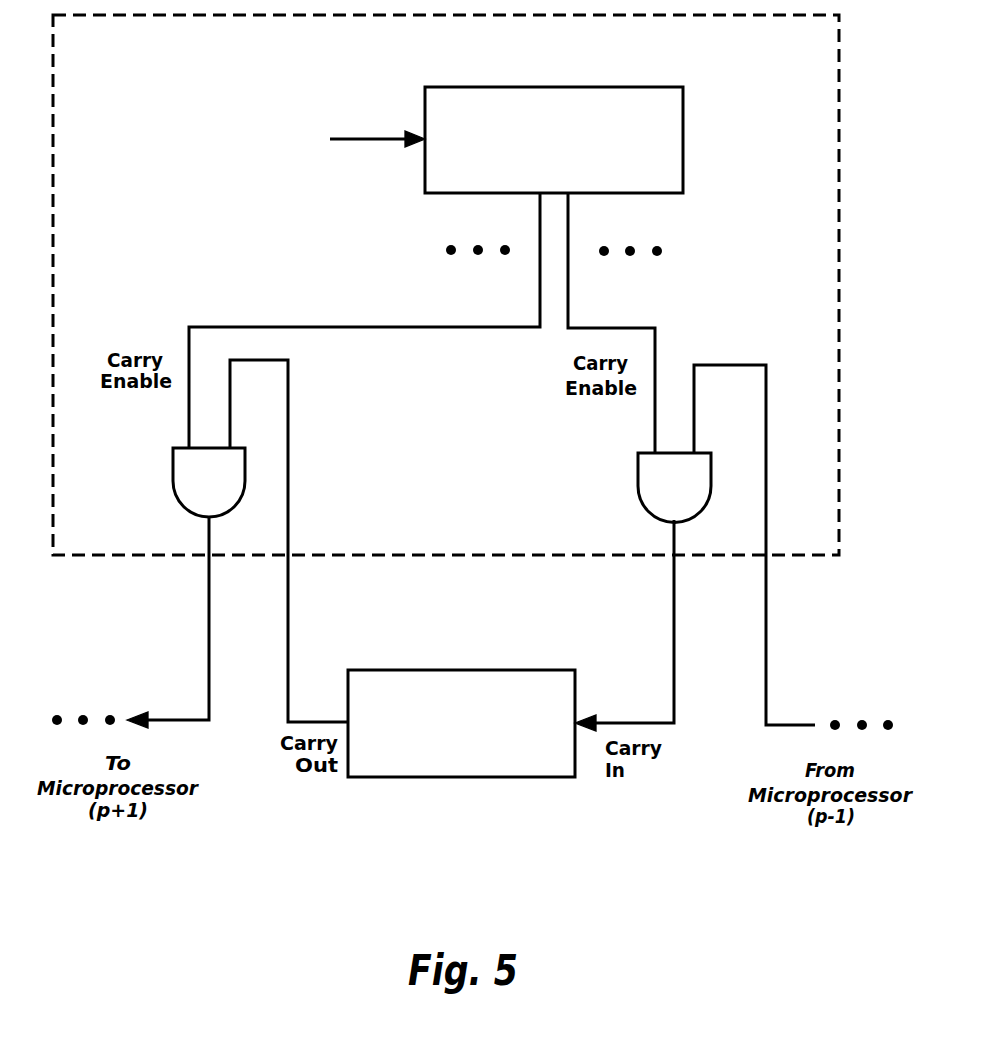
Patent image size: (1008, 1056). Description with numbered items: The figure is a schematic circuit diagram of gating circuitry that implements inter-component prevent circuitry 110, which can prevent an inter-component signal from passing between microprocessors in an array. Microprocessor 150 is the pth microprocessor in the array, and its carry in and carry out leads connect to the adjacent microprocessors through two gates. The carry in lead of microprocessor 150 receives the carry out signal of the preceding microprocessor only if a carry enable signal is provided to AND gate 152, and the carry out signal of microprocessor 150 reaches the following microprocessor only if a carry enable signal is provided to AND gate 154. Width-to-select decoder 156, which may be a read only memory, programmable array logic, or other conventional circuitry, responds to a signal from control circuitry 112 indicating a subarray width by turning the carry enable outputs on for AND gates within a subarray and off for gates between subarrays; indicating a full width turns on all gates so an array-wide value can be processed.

The inter-component prevent circuitry 110 is at (840, 108).
The control circuitry 112 is at (330, 136).
The microprocessor 150 is at (462, 777).
The AND gate 152 is at (640, 478).
The AND gate 154 is at (175, 478).
The width-to-select decoder 156 is at (643, 87).